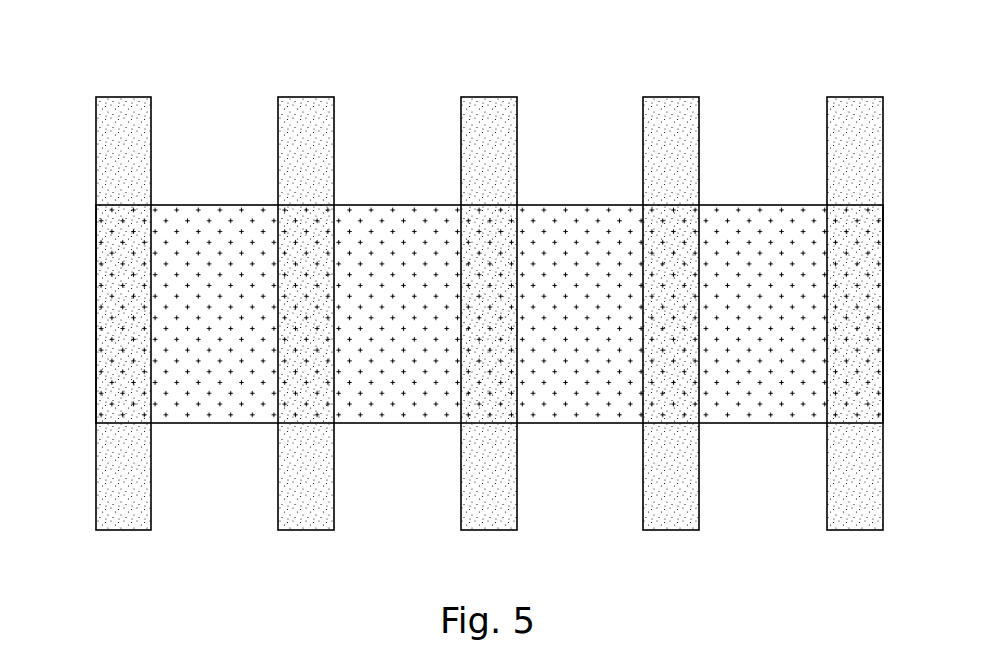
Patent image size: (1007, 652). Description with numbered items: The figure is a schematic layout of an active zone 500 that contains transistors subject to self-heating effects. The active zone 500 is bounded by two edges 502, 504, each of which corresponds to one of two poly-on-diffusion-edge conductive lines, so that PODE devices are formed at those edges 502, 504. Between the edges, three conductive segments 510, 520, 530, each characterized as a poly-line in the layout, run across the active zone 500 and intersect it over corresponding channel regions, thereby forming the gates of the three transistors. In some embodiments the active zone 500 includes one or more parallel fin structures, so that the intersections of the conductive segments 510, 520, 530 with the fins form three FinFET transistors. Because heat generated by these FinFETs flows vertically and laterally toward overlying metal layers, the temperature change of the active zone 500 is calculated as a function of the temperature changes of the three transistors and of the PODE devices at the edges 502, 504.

The active zone 500 is at (765, 217).
The edge of the active zone 502 is at (96, 253).
The edge of the active zone 504 is at (883, 252).
The conductive segment 510 is at (335, 133).
The conductive segment 520 is at (518, 133).
The conductive segment 530 is at (700, 133).